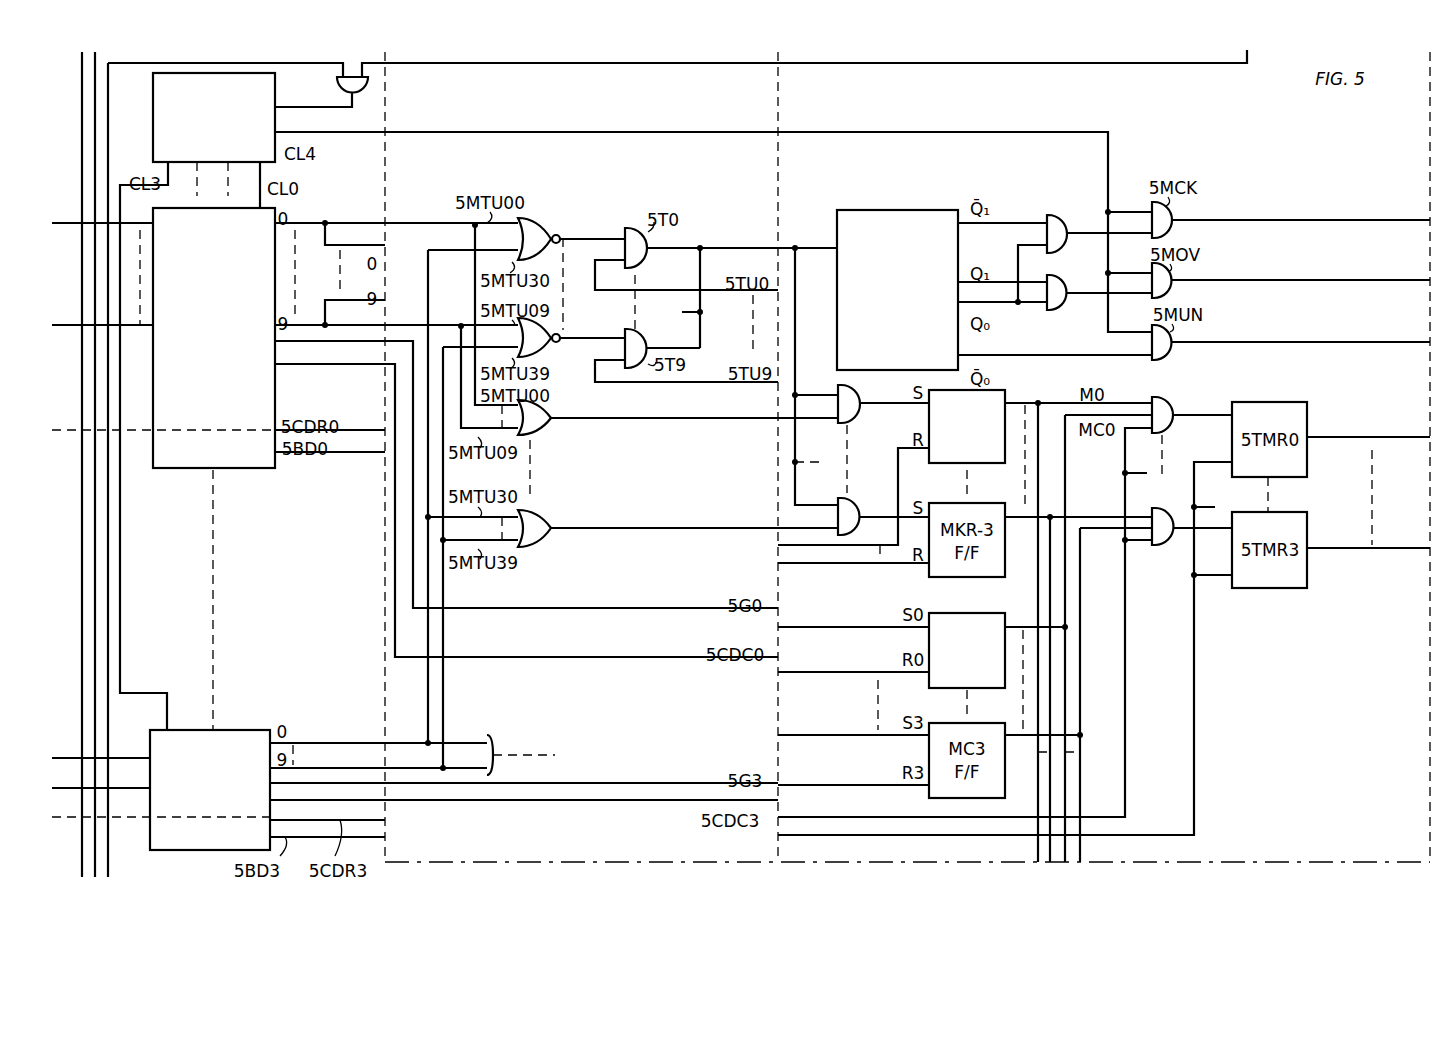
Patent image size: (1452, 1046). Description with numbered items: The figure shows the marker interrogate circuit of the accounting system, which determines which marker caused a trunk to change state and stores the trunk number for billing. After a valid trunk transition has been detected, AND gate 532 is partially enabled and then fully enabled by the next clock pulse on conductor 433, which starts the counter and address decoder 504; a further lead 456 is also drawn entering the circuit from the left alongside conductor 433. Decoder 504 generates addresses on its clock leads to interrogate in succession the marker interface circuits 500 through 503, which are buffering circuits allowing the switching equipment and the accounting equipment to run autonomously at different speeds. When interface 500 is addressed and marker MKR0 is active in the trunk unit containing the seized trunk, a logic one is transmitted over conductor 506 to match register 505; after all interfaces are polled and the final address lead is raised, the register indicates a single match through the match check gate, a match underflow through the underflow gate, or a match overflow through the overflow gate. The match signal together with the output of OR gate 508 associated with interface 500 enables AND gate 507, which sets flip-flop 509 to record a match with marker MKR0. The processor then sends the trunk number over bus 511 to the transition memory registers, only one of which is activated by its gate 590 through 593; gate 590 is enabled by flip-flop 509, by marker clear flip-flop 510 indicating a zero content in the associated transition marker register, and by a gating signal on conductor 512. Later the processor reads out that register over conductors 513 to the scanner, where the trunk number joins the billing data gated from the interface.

The conductor 433 is at (108, 560).
The bus lines 456 is at (84, 507).
The marker interface circuit 500 is at (255, 468).
The marker interface circuit 503 is at (245, 730).
The counter and address decoder 504 is at (153, 96).
The match register 505 is at (893, 210).
The conductor 506 is at (768, 237).
The AND gate 507 is at (852, 423).
The OR gate 508 is at (548, 437).
The flip-flop 509 is at (993, 463).
The marker clear flip-flop 510 is at (993, 613).
The bus 511 is at (1004, 658).
The conductor 512 is at (968, 622).
The conductors 513 is at (1350, 437).
The AND gate 532 is at (336, 84).
The gate 590 is at (1162, 397).
The gate 593 is at (1162, 508).